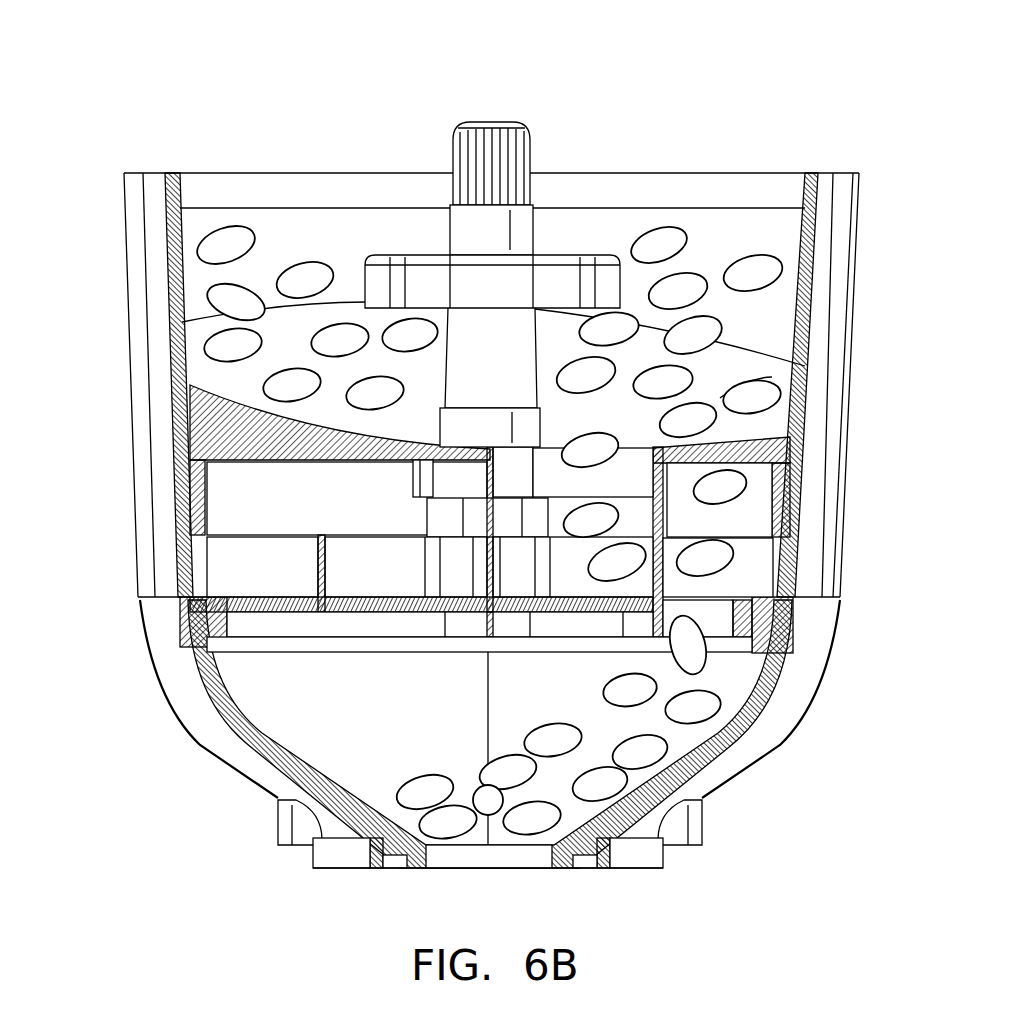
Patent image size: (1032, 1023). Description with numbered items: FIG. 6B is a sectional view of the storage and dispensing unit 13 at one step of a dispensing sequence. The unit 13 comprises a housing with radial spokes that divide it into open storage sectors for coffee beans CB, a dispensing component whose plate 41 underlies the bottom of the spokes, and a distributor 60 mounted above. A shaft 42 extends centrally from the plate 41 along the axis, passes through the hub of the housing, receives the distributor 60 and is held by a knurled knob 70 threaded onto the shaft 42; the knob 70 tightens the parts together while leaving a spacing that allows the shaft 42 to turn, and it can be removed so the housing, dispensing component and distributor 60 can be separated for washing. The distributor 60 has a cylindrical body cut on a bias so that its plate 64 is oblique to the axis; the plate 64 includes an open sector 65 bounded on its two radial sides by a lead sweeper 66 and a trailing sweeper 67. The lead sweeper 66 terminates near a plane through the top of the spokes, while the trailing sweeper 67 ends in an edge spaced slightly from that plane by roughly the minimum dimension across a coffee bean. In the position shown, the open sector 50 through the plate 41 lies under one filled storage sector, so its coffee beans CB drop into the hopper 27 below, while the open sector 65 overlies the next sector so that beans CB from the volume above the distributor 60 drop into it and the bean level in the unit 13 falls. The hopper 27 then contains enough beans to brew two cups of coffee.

The storage and dispensing unit 13 is at (824, 170).
The shaft 42 is at (497, 120).
The knurled knob 70 is at (365, 282).
The cleaning bodies CB is at (687, 292).
The plate 64 is at (793, 378).
The distributor 60 is at (803, 450).
The open sector 65 is at (590, 487).
The plate 41 is at (817, 628).
The open sector 50 is at (620, 583).
The hopper 27 is at (727, 757).
The lead sweeper 66 is at (487, 507).
The trailing sweeper 67 is at (665, 476).